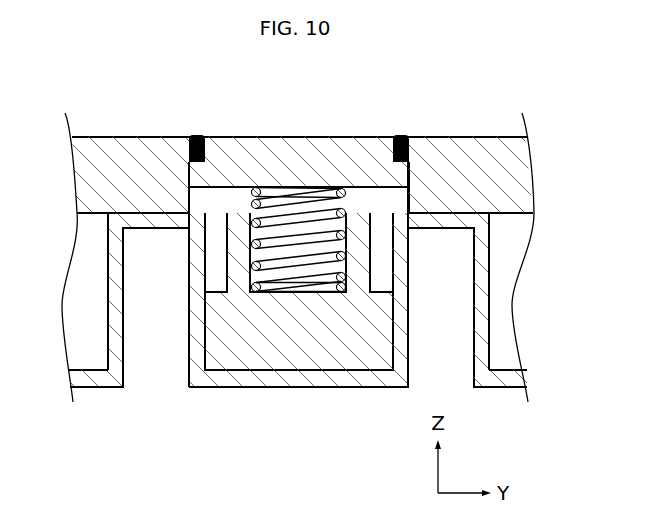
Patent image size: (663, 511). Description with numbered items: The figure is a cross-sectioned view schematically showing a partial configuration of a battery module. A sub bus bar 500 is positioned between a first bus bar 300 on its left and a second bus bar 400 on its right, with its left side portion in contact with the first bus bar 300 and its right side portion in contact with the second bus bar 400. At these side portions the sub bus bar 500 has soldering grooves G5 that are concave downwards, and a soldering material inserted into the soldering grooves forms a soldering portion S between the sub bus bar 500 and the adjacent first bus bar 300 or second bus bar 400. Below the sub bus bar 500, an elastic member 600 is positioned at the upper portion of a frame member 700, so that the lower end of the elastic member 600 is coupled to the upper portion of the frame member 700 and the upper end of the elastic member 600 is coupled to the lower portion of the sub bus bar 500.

The first bus bar 300 is at (119, 137).
The second bus bar 400 is at (474, 137).
The sub bus bar 500 is at (338, 137).
The soldering portion S is at (190, 122).
The soldering groove G5 is at (195, 167).
The elastic member 600 is at (295, 282).
The frame member 700 is at (352, 388).